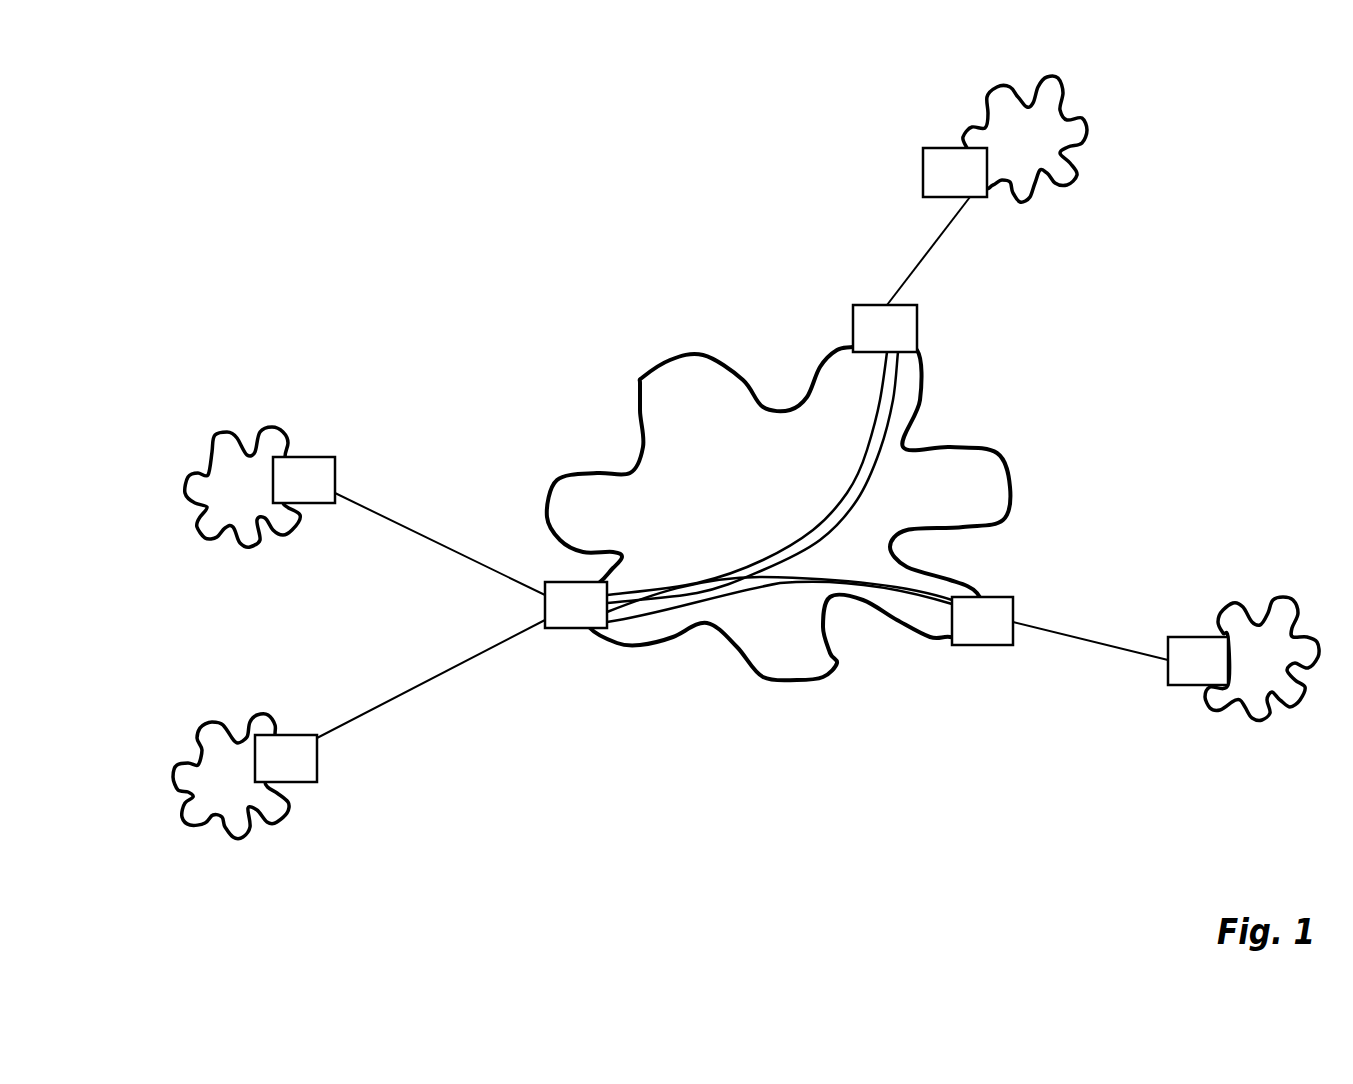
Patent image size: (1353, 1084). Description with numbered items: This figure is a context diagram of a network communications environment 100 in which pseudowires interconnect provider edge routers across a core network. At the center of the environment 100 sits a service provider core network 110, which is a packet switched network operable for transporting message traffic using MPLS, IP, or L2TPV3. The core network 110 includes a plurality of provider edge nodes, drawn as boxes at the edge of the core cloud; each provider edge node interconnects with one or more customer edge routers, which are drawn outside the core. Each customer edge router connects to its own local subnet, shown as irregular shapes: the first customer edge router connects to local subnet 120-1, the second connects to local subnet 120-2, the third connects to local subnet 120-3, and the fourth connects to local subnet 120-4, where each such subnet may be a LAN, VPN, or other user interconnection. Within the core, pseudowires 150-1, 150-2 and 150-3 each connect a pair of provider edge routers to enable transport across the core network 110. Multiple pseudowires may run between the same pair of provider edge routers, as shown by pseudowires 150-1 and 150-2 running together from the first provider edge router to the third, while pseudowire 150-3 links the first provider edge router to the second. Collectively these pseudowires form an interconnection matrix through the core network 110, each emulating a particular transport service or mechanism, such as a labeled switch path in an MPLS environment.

The network communications environment 100 is at (505, 225).
The service provider core network 110 is at (633, 383).
The local subnet 120-1 is at (212, 440).
The local subnet 120-2 is at (197, 738).
The local subnet 120-3 is at (1218, 618).
The local subnet 120-4 is at (1068, 185).
The pseudowire 150-1 is at (770, 537).
The pseudowire 150-2 is at (860, 470).
The pseudowire 150-3 is at (813, 578).